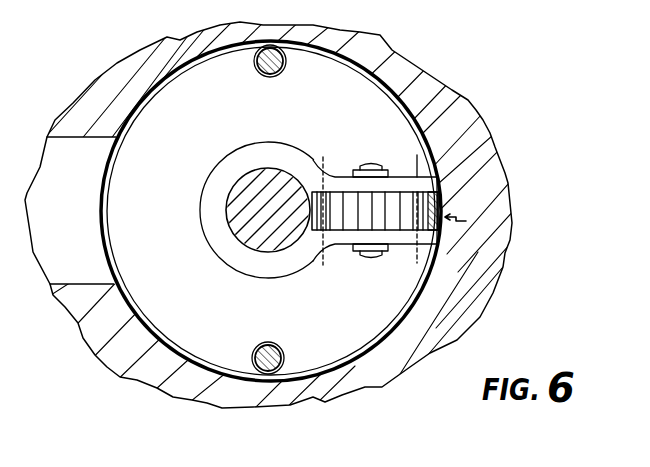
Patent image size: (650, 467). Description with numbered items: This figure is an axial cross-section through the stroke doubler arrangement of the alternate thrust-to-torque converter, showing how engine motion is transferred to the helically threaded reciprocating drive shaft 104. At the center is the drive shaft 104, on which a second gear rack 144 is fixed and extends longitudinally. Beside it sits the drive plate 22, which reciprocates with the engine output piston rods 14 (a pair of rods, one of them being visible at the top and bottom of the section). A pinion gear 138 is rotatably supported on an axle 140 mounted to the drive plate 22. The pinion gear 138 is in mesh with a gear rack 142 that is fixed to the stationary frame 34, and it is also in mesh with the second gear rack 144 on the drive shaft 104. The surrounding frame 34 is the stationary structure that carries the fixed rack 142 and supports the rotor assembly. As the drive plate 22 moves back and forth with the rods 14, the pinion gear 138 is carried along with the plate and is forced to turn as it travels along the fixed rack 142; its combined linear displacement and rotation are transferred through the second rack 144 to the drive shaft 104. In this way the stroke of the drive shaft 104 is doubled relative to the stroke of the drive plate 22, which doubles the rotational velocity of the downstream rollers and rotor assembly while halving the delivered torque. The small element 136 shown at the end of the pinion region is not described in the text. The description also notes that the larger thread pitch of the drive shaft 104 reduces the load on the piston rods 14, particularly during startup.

The piston rod 14 is at (278, 60).
The drive shaft 104 is at (293, 182).
The drive plate 22 is at (397, 174).
The pinion gear 138 is at (405, 191).
The gear rack 142 is at (440, 206).
The retaining clip 136 is at (466, 221).
The frame 34 is at (498, 254).
The second gear rack 144 is at (307, 216).
The axle 140 is at (366, 259).